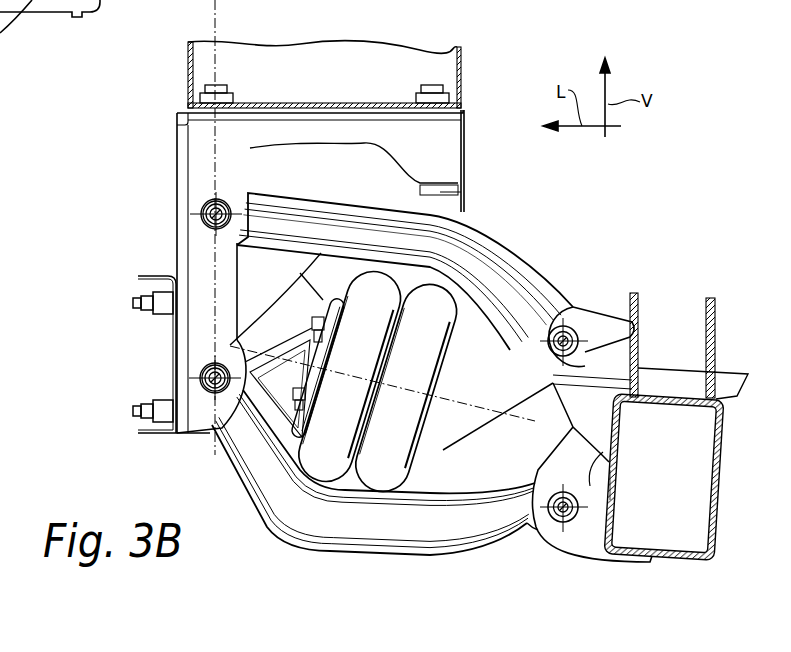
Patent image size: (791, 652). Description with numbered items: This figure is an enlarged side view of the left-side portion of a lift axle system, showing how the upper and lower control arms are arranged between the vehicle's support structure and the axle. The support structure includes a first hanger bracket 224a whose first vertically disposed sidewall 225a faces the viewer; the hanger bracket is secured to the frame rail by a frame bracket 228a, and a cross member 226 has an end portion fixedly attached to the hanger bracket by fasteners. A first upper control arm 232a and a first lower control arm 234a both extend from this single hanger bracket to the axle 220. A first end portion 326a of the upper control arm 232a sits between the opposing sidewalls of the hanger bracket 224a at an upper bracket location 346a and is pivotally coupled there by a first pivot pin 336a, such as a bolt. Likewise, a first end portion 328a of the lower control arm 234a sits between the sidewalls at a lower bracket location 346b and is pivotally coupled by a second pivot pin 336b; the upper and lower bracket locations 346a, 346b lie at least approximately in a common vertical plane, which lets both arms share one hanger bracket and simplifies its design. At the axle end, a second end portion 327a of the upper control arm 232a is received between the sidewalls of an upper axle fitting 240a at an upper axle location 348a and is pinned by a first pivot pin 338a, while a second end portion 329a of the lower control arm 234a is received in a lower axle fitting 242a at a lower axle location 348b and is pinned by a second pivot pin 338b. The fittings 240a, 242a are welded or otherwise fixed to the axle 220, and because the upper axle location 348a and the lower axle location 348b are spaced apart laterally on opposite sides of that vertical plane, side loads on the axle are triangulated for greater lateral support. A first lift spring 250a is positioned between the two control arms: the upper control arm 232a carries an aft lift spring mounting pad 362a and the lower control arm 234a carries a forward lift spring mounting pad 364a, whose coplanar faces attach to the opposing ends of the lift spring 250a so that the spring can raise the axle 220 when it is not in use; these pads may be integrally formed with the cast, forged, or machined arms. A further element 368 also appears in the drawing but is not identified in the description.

The axle 220 is at (718, 520).
The first hanger bracket 224a is at (120, 0).
The first vertically disposed sidewall 225a is at (197, 280).
The cross member 226 is at (140, 437).
The frame bracket 228a is at (463, 78).
The first upper control arm 232a is at (480, 213).
The first lower control arm 234a is at (292, 547).
The first upper fitting 240a is at (591, 317).
The first lower fitting 242a is at (585, 558).
The first lift spring 250a is at (421, 290).
The first end portion of the upper control arm 326a is at (268, 180).
The second end portion of the upper control arm 327a is at (576, 300).
The first end portion of the lower control arm 328a is at (203, 439).
The second end portion of the lower control arm 329a is at (540, 545).
The first pivot pin 336a is at (205, 205).
The second pivot pin 336b is at (210, 395).
The first pivot pin 338a is at (563, 325).
The second pivot pin 338b is at (545, 515).
The upper bracket location 346a is at (205, 218).
The lower bracket location 346b is at (200, 375).
The upper axle location 348a is at (640, 330).
The lower axle location 348b is at (585, 490).
The aft lift spring mounting pad 362a is at (445, 448).
The forward lift spring mounting pad 364a is at (257, 322).
The spring bracket 368 is at (307, 450).